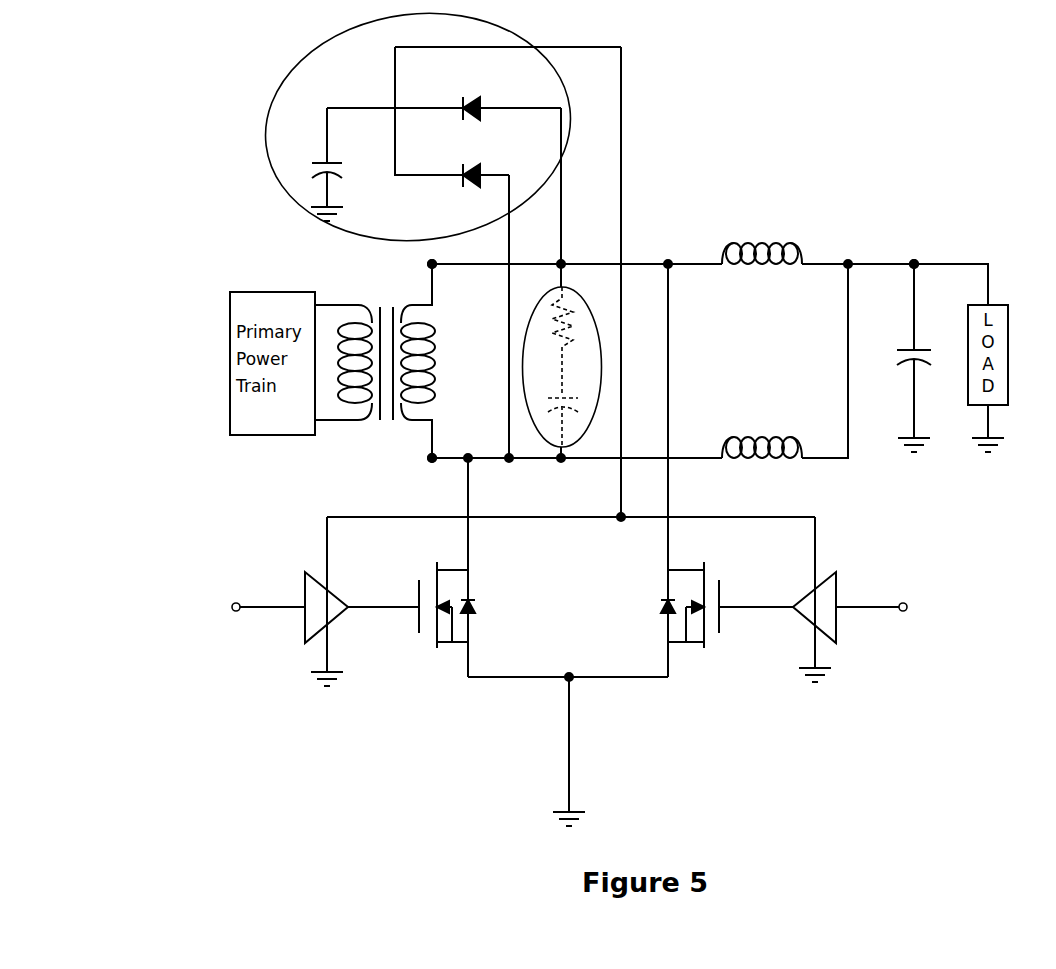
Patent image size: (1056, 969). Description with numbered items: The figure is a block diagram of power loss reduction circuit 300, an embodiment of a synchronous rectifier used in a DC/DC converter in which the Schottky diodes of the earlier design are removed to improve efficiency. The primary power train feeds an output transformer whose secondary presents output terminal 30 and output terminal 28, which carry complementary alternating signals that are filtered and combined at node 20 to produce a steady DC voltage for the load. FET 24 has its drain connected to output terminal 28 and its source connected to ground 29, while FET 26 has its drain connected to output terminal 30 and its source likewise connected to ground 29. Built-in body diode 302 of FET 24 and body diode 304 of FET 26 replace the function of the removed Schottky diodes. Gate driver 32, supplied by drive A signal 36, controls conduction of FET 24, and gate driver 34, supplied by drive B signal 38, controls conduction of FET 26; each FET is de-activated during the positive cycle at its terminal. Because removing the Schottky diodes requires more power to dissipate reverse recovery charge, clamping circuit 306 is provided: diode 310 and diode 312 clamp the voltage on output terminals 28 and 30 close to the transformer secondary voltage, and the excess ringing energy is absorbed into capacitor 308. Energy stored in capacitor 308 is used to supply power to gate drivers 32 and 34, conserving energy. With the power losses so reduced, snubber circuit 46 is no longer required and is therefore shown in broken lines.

The node 20 is at (914, 262).
The FET 24 is at (447, 652).
The FET 26 is at (705, 649).
The output terminal 28 is at (430, 461).
The ground 29 is at (589, 820).
The output terminal 30 is at (430, 264).
The gate driver 32 is at (306, 641).
The gate driver 34 is at (837, 634).
The drive A signal 36 is at (192, 622).
The drive B signal 38 is at (948, 614).
The snubber circuit 46 is at (588, 302).
The power loss reduction circuit 300 is at (746, 190).
The body diode 302 is at (478, 606).
The body diode 304 is at (661, 603).
The clamping circuit 306 is at (309, 48).
The capacitor 308 is at (331, 164).
The diode 310 is at (471, 97).
The diode 312 is at (471, 165).